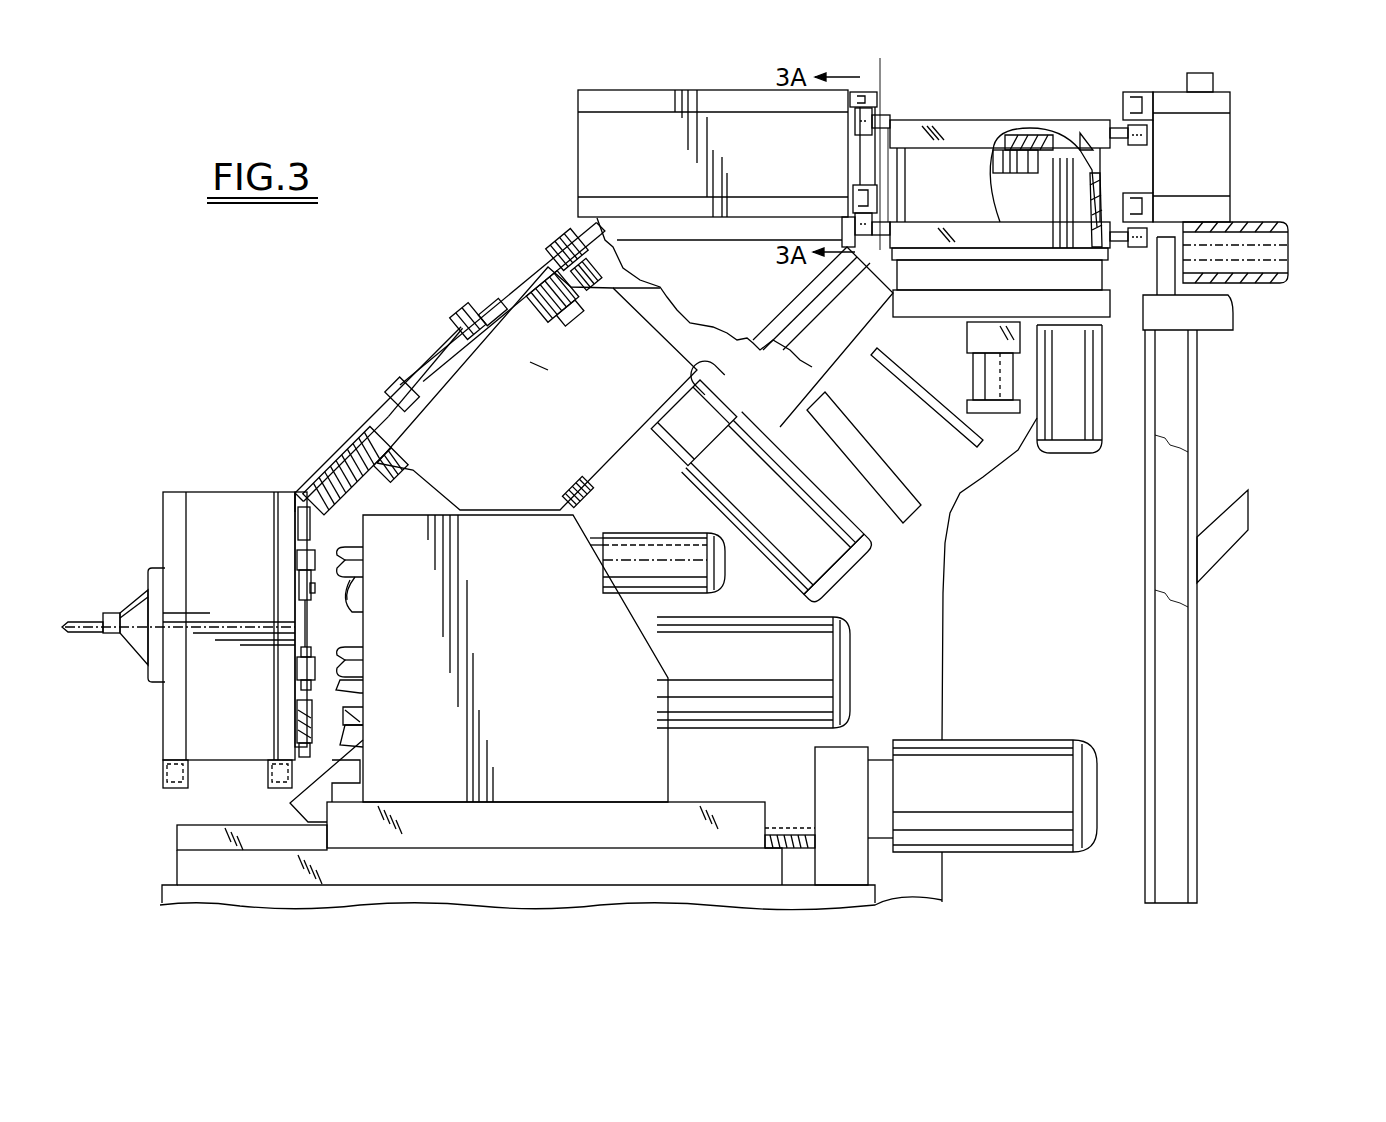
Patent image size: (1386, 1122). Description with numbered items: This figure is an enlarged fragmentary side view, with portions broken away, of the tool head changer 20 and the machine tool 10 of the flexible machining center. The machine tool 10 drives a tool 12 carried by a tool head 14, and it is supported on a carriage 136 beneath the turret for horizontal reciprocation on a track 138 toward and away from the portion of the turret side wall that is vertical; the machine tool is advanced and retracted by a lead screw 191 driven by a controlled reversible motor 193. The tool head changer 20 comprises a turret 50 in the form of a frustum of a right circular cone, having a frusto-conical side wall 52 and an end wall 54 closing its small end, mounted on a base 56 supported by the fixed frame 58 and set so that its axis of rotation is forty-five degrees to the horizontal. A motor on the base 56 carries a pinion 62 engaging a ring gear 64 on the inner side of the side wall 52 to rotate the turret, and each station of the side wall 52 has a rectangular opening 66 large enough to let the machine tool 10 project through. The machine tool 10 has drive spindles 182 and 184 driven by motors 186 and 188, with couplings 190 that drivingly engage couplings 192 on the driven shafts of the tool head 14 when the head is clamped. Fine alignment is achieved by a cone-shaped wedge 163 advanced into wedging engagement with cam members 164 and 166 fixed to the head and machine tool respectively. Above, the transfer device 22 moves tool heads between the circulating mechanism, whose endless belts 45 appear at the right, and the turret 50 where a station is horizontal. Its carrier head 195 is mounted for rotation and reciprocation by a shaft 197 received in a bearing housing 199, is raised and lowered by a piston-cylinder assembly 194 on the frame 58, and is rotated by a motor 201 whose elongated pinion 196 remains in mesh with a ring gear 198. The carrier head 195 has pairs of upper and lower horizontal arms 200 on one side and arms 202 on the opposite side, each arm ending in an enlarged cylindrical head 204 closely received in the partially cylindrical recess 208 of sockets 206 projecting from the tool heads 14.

The machine tool 10 is at (570, 655).
The tool 12 is at (102, 610).
The tool head 14 is at (578, 116).
The tool head changer 20 is at (440, 360).
The transfer device 22 is at (955, 118).
The endless belts 45 is at (1285, 235).
The turret 50 is at (330, 470).
The frusto-conical side wall 52 is at (302, 587).
The end wall 54 is at (522, 268).
The base 56 is at (584, 411).
The fixed frame 58 is at (822, 385).
The pinion 62 is at (545, 258).
The ring gear 64 is at (370, 440).
The rectangular opening 66 is at (290, 492).
The carriage 136 is at (727, 803).
The track 138 is at (710, 877).
The wedge 163 is at (355, 729).
The cam member 164 is at (297, 733).
The cam member 166 is at (358, 712).
The drive spindle 182 is at (360, 548).
The drive spindle 184 is at (358, 673).
The motor 186 is at (655, 545).
The motor 188 is at (770, 671).
The couplings 190 is at (340, 647).
The lead screw 191 is at (800, 833).
The couplings 192 is at (303, 556).
The reversible motor 193 is at (1016, 801).
The piston-cylinder assembly 194 is at (978, 385).
The carrier head 195 is at (990, 122).
The elongated pinion 196 is at (1063, 168).
The shaft 197 is at (990, 163).
The ring gear 198 is at (1085, 250).
The bearing housing 199 is at (958, 283).
The horizontal arms 200 is at (882, 222).
The motor 201 is at (1062, 455).
The horizontal arms 202 is at (1113, 232).
The enlarged cylindrical head 204 is at (855, 127).
The sockets 206 is at (878, 103).
The partially cylindrical recess 208 is at (1148, 92).